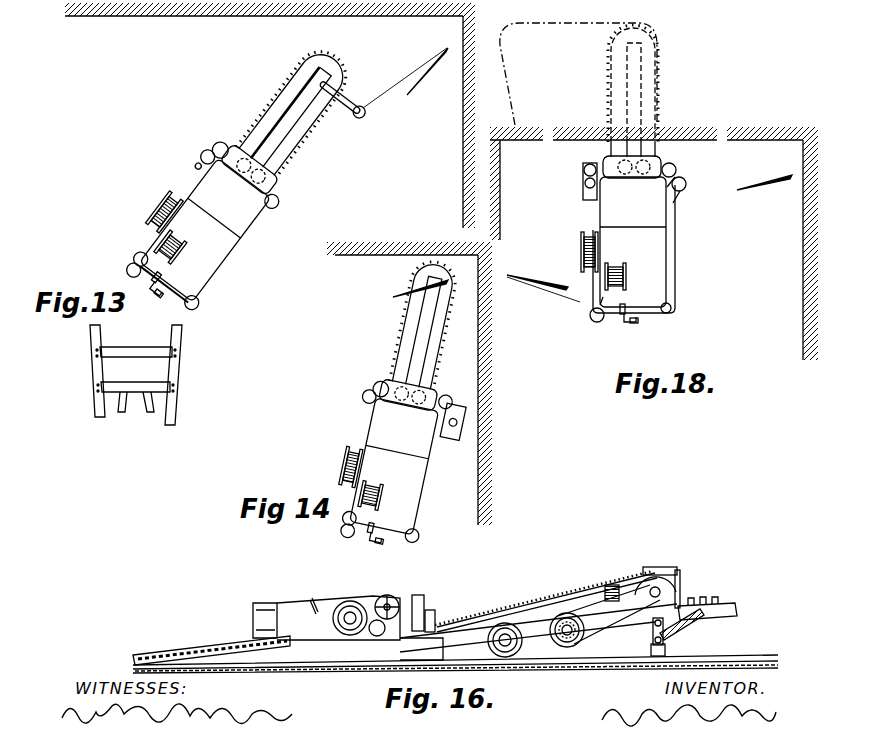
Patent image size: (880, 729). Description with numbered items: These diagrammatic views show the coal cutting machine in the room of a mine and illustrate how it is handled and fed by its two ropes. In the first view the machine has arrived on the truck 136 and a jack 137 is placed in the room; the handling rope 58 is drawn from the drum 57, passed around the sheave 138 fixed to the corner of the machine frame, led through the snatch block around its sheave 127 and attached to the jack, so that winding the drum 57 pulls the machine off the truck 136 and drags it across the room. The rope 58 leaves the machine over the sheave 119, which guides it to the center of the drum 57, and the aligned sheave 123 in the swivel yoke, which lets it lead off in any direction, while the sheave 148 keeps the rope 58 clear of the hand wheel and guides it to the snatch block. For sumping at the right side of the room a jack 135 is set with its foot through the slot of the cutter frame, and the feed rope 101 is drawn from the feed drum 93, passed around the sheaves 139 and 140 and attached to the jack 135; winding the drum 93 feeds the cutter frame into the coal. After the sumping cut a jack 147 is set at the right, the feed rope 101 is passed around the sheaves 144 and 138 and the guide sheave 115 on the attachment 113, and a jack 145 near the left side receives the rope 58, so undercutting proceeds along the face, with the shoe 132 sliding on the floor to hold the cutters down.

In FIG. 13, the drum 57 is at (182, 257).
In FIG. 14, the drum 57 is at (384, 494).
In FIG. 18, the drum 57 is at (627, 280).
In FIG. 13, the rope 58 is at (321, 152).
In FIG. 14, the rope 58 is at (424, 324).
In FIG. 18, the rope 58 is at (545, 295).
In FIG. 16, the rope 58 is at (572, 597).
In FIG. 13, the feed drum 93 is at (152, 207).
In FIG. 14, the feed drum 93 is at (342, 467).
In FIG. 18, the feed drum 93 is at (589, 241).
In FIG. 14, the feed rope 101 is at (368, 422).
In FIG. 18, the feed rope 101 is at (676, 289).
In FIG. 18, the attachment 113 is at (681, 195).
In FIG. 18, the guide sheave 115 is at (688, 182).
In FIG. 13, the sheave 119 is at (150, 279).
In FIG. 14, the sheave 119 is at (368, 531).
In FIG. 16, the sheave 119 is at (437, 620).
In FIG. 13, the sheave 123 is at (153, 298).
In FIG. 14, the sheave 123 is at (381, 546).
In FIG. 16, the sheave 123 is at (441, 630).
In FIG. 13, the sheave 127 is at (362, 118).
In FIG. 18, the shoe 132 is at (583, 193).
In FIG. 14, the jack 135 is at (410, 292).
In FIG. 13, the truck 136 is at (178, 362).
In FIG. 16, the truck 136 is at (652, 572).
In FIG. 13, the jack 137 is at (431, 78).
In FIG. 13, the sheave 138 is at (197, 309).
In FIG. 18, the sheave 138 is at (669, 312).
In FIG. 14, the sheave 139 is at (376, 381).
In FIG. 14, the sheave 140 is at (400, 378).
In FIG. 18, the sheave 144 is at (600, 300).
In FIG. 18, the jack 145 is at (558, 278).
In FIG. 18, the jack 147 is at (758, 191).
In FIG. 13, the sheave 148 is at (131, 257).
In FIG. 14, the sheave 148 is at (342, 532).
In FIG. 18, the sheave 148 is at (599, 322).